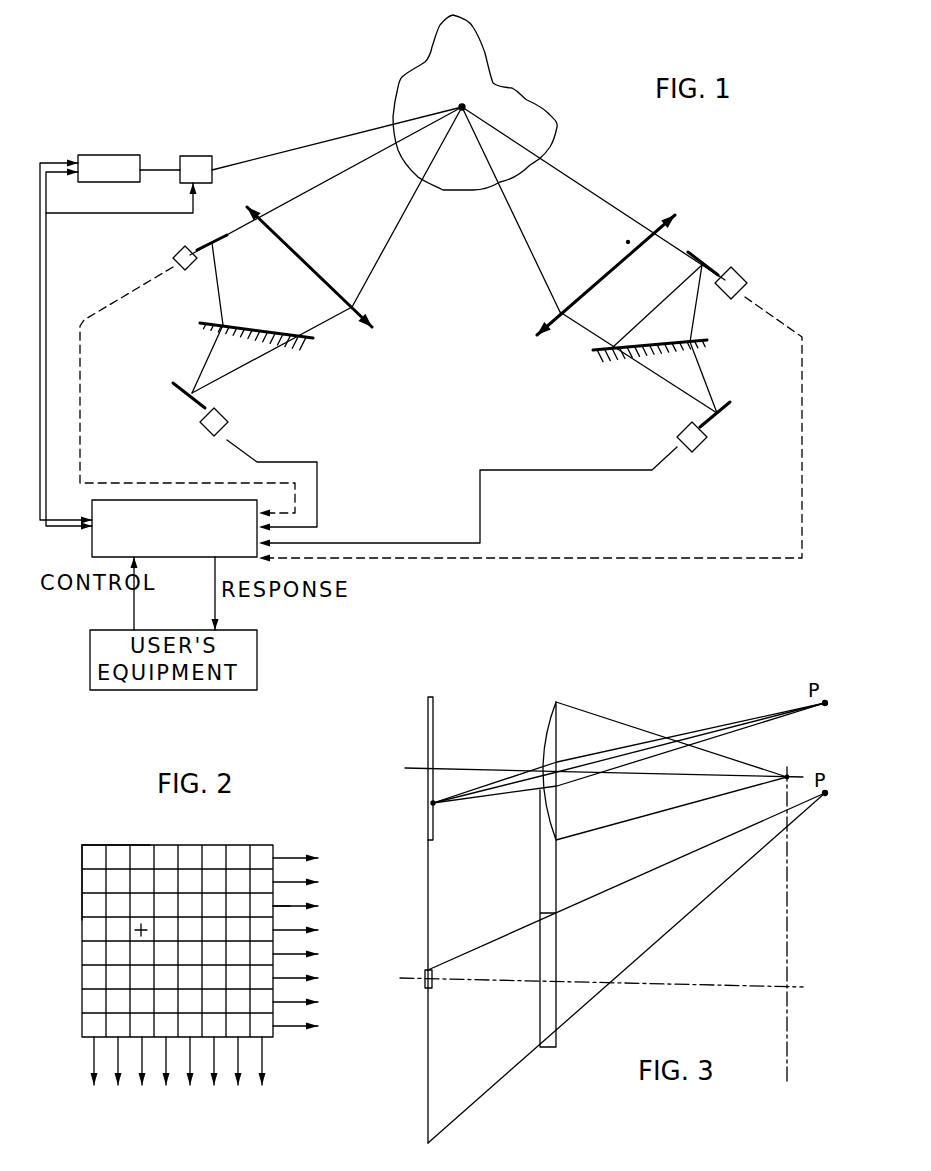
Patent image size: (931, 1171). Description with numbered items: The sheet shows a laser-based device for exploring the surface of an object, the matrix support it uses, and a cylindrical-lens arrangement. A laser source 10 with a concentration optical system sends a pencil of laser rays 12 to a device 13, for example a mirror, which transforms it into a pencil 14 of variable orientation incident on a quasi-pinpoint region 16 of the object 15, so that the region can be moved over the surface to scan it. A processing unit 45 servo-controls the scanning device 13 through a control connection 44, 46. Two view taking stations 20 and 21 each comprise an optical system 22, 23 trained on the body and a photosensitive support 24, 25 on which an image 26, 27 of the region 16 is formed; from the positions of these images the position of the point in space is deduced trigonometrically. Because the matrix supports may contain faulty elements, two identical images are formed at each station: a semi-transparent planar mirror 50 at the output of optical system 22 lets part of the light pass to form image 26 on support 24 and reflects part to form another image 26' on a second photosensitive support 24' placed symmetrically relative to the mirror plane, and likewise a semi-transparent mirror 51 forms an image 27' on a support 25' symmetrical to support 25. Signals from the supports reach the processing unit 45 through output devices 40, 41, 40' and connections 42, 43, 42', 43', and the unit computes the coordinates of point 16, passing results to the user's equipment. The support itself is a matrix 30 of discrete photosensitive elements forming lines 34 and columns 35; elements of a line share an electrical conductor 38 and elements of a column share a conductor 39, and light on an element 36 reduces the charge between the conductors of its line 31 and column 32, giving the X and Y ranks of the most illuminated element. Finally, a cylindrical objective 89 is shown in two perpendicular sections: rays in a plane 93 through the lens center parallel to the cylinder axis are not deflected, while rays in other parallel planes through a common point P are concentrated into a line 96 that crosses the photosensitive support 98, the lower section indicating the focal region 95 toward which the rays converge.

In FIG. 1, the laser source 10 is at (120, 154).
In FIG. 1, the pencil of laser rays 12 is at (162, 168).
In FIG. 1, the scanning device 13 is at (197, 155).
In FIG. 1, the pencil of variable orientation 14 is at (316, 142).
In FIG. 1, the object 15 is at (430, 76).
In FIG. 1, the illuminated quasi-pinpoint region 16 is at (464, 106).
In FIG. 1, the view taking station 20 is at (357, 342).
In FIG. 1, the view taking station 21 is at (551, 349).
In FIG. 1, the optical system 22 is at (355, 307).
In FIG. 1, the optical system 23 is at (652, 235).
In FIG. 1, the second photosensitive support 24' is at (184, 237).
In FIG. 1, the image 26' is at (223, 266).
In FIG. 1, the output device 40' is at (180, 278).
In FIG. 1, the photosensitive support 24 is at (163, 402).
In FIG. 1, the image 26 is at (185, 391).
In FIG. 1, the output device 40 is at (239, 419).
In FIG. 1, the semi-transparent planar mirror 50 is at (301, 345).
In FIG. 1, the photosensitive support 25' is at (727, 252).
In FIG. 1, the image 27' is at (712, 278).
In FIG. 1, the output device 41 is at (746, 281).
In FIG. 1, the semi-transparent mirror 51 is at (605, 366).
In FIG. 1, the photosensitive support 25 is at (740, 414).
In FIG. 1, the image 27 is at (732, 404).
In FIG. 1, the connection 42 is at (294, 485).
In FIG. 1, the connection 42' is at (179, 392).
In FIG. 1, the connection 43 is at (468, 495).
In FIG. 1, the connection 43' is at (530, 429).
In FIG. 1, the control connection 44 is at (48, 238).
In FIG. 1, the processing unit 45 is at (177, 560).
In FIG. 1, the control connection 46 is at (126, 212).
In FIG. 2, the matrix 30 is at (250, 813).
In FIG. 2, the line conductor 31 is at (306, 930).
In FIG. 2, the column conductor 32 is at (138, 1082).
In FIG. 2, the lines 34 is at (80, 892).
In FIG. 2, the columns 35 is at (140, 840).
In FIG. 2, the photosensitive element 36 is at (135, 930).
In FIG. 2, the electrical conductor 38 is at (288, 883).
In FIG. 2, the electrical conductor 39 is at (237, 1060).
In FIG. 3, the cylindrical objective 89 is at (563, 702).
In FIG. 3, the plane 93 is at (585, 764).
In FIG. 3, the focal plane 95 is at (784, 780).
In FIG. 3, the line 96 is at (435, 808).
In FIG. 3, the photosensitive support 98 is at (434, 710).